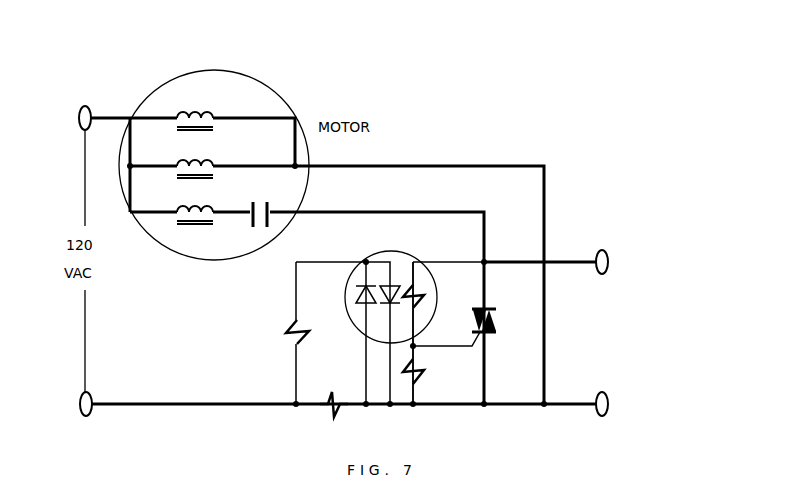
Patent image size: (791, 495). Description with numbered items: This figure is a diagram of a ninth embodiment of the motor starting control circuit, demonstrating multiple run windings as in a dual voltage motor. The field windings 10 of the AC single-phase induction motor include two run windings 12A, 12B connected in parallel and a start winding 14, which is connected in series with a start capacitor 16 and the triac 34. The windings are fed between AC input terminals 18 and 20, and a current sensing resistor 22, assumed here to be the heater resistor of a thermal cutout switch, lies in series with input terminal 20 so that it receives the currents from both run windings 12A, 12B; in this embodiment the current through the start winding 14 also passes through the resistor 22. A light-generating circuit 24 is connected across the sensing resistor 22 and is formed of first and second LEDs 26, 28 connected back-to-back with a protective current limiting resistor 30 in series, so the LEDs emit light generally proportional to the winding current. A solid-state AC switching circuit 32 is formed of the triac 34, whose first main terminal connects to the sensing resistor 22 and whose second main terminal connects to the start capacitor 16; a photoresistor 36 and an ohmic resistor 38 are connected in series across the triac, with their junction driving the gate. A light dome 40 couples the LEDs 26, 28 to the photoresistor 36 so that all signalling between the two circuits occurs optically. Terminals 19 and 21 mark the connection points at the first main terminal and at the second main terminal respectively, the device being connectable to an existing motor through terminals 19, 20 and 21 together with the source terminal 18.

The field windings 10 is at (256, 147).
The run winding 12A is at (214, 162).
The run winding 12B is at (216, 100).
The start winding 14 is at (214, 220).
The start capacitor 16 is at (243, 221).
The AC input terminal 18 is at (70, 118).
The terminal 19 is at (613, 262).
The AC input terminal 20 is at (71, 404).
The terminal 21 is at (613, 404).
The current sensing resistor 22 is at (341, 394).
The light-generating circuit 24 is at (431, 243).
The first LED 26 is at (361, 300).
The second LED 28 is at (383, 287).
The current limiting resistor 30 is at (290, 339).
The solid-state AC switching circuit 32 is at (456, 326).
The triac 34 is at (498, 317).
The photoresistor 36 is at (422, 296).
The ohmic resistor 38 is at (424, 368).
The light dome 40 is at (361, 334).